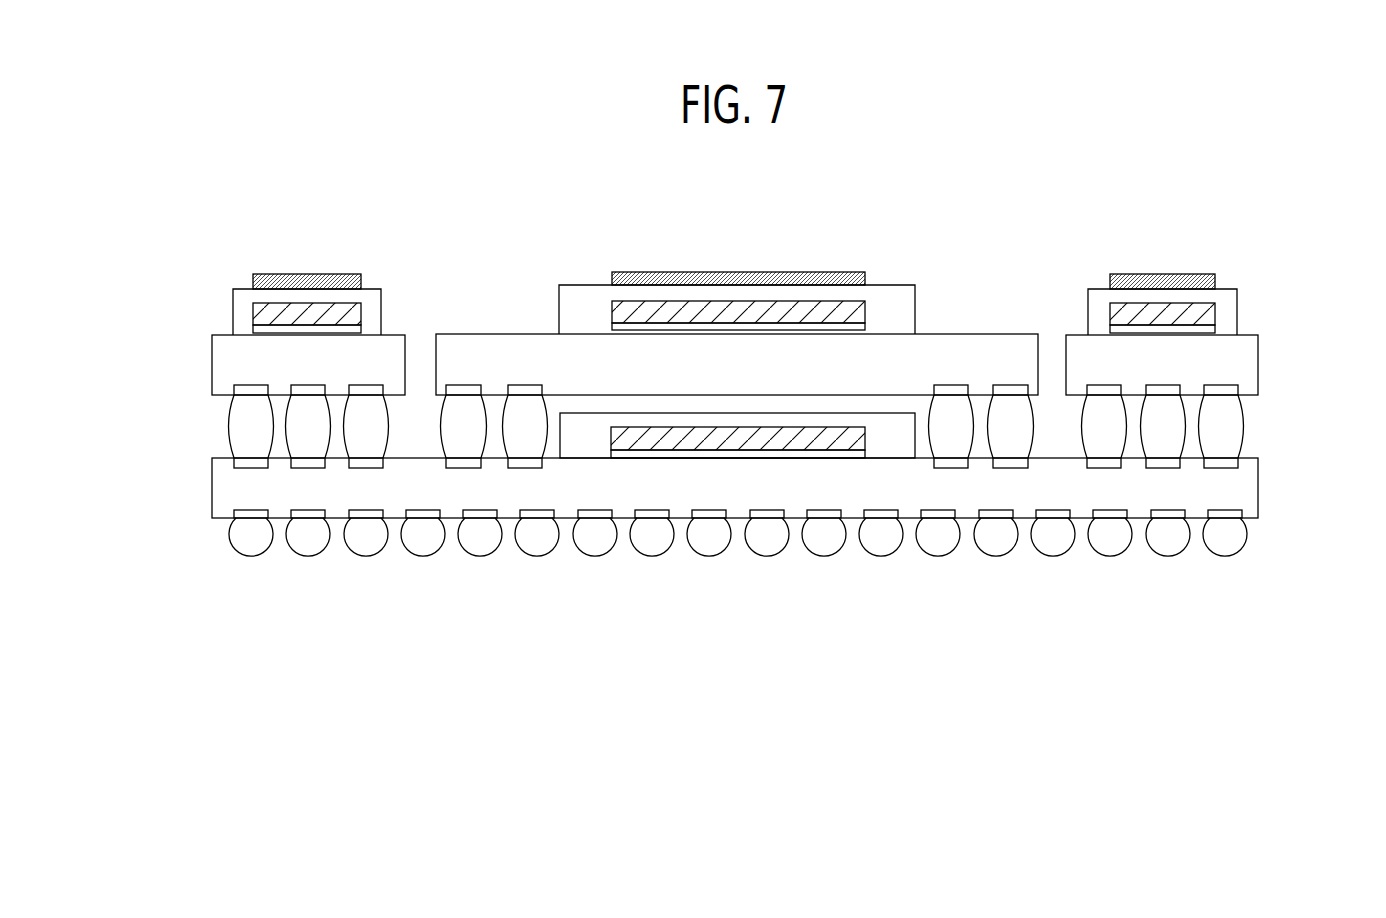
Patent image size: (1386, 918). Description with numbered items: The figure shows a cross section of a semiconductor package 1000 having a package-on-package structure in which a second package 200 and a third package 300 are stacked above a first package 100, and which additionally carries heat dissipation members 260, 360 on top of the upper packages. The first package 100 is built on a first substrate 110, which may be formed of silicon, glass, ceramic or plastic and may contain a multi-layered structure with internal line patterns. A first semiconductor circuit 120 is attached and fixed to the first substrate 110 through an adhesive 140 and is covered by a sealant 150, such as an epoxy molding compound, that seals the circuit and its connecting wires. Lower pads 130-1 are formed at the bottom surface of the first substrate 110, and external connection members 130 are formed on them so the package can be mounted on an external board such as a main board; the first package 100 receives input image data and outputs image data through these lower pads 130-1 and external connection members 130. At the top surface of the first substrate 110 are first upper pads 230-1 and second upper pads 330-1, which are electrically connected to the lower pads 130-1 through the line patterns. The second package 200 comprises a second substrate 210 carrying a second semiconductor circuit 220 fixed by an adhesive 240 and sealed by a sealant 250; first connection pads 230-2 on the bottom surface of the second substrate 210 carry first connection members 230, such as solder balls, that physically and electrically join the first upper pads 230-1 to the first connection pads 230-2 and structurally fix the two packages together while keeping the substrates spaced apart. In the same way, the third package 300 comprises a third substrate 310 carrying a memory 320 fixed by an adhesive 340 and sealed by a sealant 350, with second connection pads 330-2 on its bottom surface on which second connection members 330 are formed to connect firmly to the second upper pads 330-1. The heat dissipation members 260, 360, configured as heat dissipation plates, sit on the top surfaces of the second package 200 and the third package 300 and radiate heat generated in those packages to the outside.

The semiconductor package 1000 is at (1117, 186).
The first package 100 is at (563, 683).
The first substrate 110 is at (1260, 492).
The first semiconductor circuit 120 is at (608, 441).
The external connection members 130 is at (1224, 546).
The lower pads 130-1 is at (1240, 512).
The adhesive 140 is at (633, 456).
The sealant 150 is at (903, 448).
The second package 200 is at (670, 683).
The second substrate 210 is at (996, 333).
The second semiconductor circuit 220 is at (708, 318).
The first connection members 230 is at (440, 440).
The first upper pads 230-1 is at (463, 468).
The first connection pads 230-2 is at (470, 390).
The adhesive 240 is at (760, 328).
The sealant 250 is at (889, 290).
The heat dissipation member 260 is at (742, 270).
The third package 300 is at (777, 683).
The third substrate 310 is at (212, 350).
The memory 320 is at (258, 312).
The second connection members 330 is at (228, 427).
The second upper pads 330-1 is at (246, 462).
The second connection pads 330-2 is at (246, 388).
The adhesive 340 is at (258, 330).
The sealant 350 is at (245, 288).
The heat dissipation member 360 is at (310, 272).